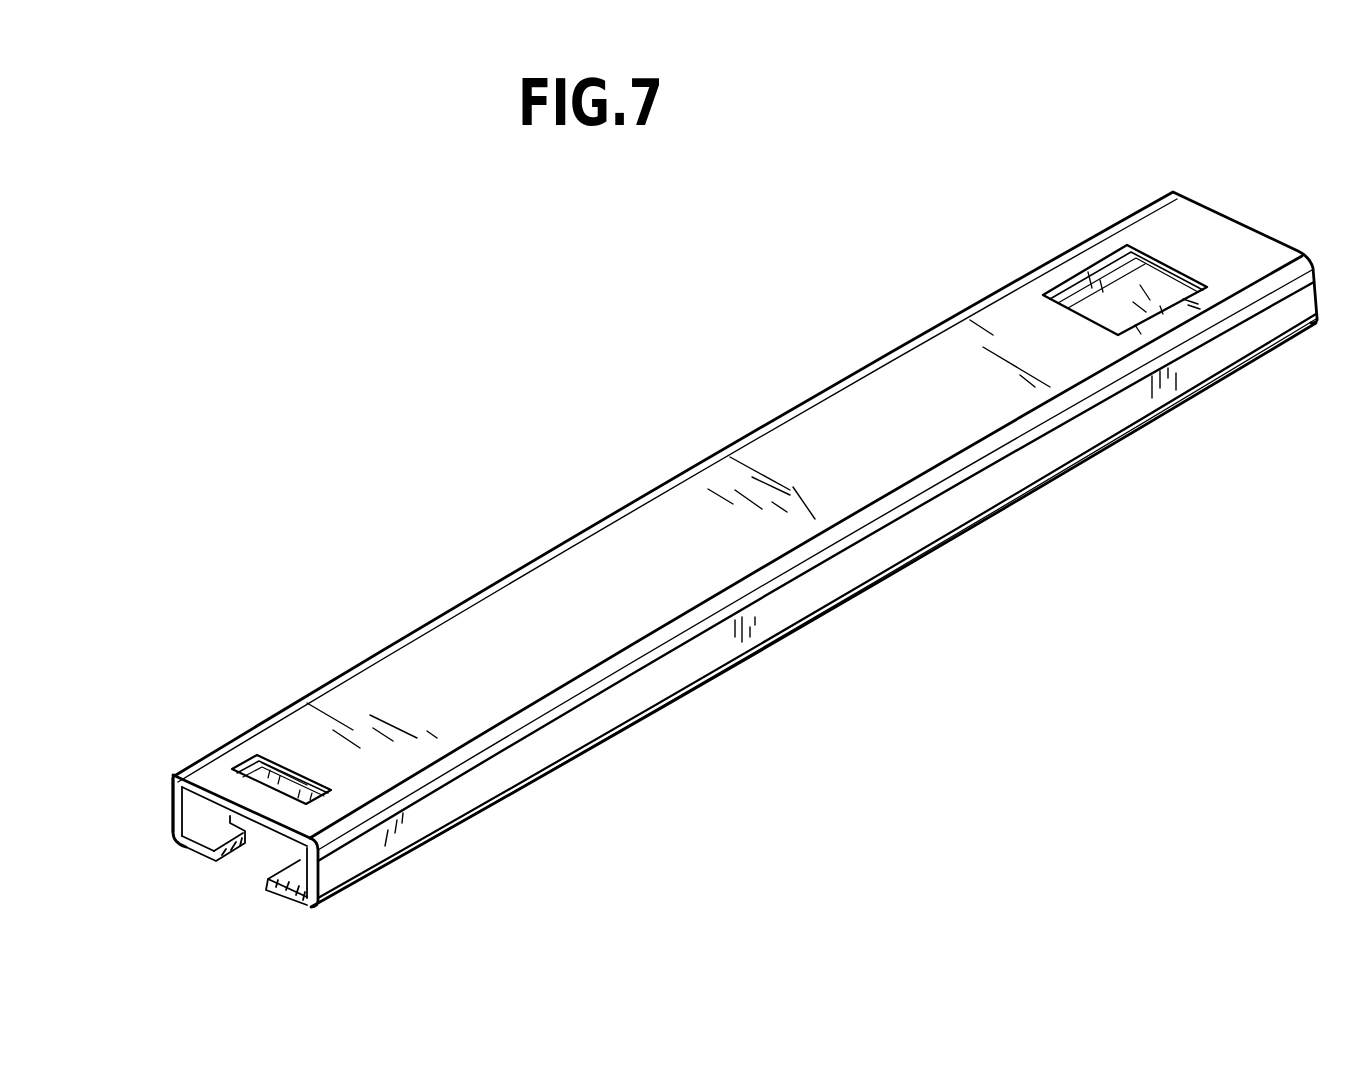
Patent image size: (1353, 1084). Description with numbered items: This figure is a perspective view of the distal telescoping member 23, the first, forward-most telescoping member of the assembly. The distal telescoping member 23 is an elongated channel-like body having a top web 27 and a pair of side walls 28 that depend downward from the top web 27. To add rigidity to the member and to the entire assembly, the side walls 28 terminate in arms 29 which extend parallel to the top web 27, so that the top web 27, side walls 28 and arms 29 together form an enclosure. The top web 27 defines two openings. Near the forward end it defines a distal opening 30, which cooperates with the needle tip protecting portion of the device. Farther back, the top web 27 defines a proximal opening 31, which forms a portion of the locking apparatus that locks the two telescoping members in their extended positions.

The distal telescoping member 23 is at (627, 520).
The top web 27 is at (815, 433).
The side walls 28 is at (1083, 436).
The arms 29 is at (263, 882).
The distal opening 30 is at (258, 757).
The proximal opening 31 is at (1083, 241).